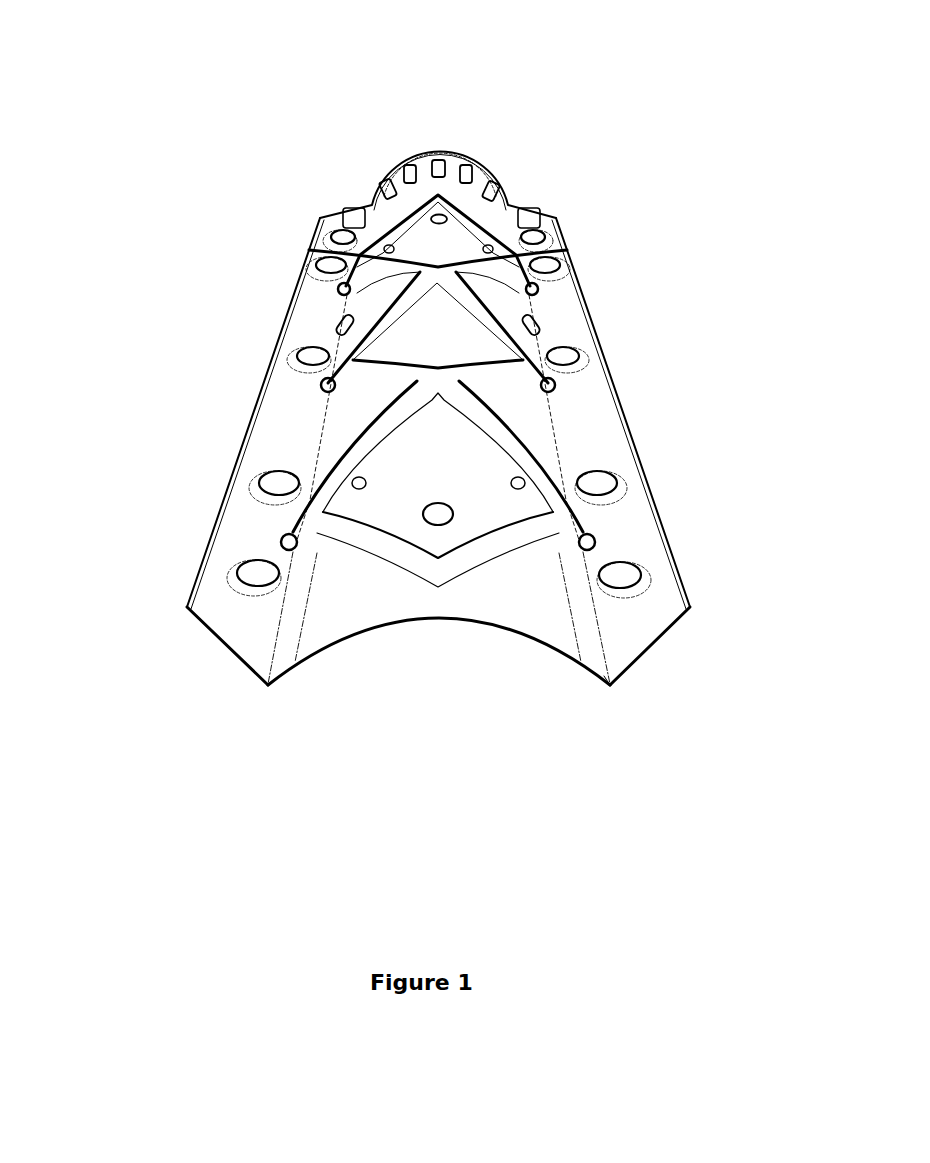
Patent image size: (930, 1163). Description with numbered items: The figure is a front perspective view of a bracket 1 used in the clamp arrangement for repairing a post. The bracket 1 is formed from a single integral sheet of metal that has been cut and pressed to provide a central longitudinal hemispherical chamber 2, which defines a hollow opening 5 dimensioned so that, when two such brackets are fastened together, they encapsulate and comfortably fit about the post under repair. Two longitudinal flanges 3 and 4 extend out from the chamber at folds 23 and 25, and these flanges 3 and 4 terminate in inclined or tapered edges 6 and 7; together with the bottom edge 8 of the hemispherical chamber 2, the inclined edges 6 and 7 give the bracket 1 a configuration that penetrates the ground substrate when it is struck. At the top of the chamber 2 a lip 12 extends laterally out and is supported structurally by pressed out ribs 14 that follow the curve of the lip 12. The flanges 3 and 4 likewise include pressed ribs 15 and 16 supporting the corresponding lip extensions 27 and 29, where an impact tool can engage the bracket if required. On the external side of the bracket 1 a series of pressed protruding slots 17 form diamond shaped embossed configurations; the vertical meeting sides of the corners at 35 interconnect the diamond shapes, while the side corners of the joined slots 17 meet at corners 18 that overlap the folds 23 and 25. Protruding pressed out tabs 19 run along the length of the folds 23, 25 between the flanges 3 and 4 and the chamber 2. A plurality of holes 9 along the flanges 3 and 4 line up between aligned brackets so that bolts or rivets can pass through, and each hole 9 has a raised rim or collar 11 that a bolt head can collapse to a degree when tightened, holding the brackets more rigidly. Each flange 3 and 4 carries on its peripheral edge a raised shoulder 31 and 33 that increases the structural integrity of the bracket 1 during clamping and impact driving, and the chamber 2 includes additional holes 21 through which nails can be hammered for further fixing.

The bracket 1 is at (652, 332).
The central longitudinal hemispherical chamber 2 is at (371, 598).
The flange 3 is at (595, 440).
The flange 4 is at (287, 402).
The hollow opening 5 is at (351, 645).
The inclined or tapered edge 6 is at (645, 662).
The inclined or tapered edge 7 is at (218, 637).
The bottom edge 8 is at (530, 634).
The holes 9 is at (560, 264).
The raised rim or collar 11 is at (243, 560).
The lip 12 is at (441, 152).
The pressed out ribs 14 is at (466, 203).
The pressed rib 15 is at (537, 214).
The pressed rib 16 is at (343, 212).
The pressed protruding slots 17 is at (478, 216).
The corners 18 is at (338, 288).
The protruding pressed out tabs 19 is at (336, 326).
The additional holes 21 is at (437, 214).
The fold 23 is at (607, 690).
The fold 25 is at (267, 687).
The lip extension 27 is at (524, 207).
The lip extension 29 is at (352, 208).
The raised shoulder 31 is at (192, 596).
The raised shoulder 33 is at (692, 583).
The vertical meeting sides of the corners 35 is at (331, 238).